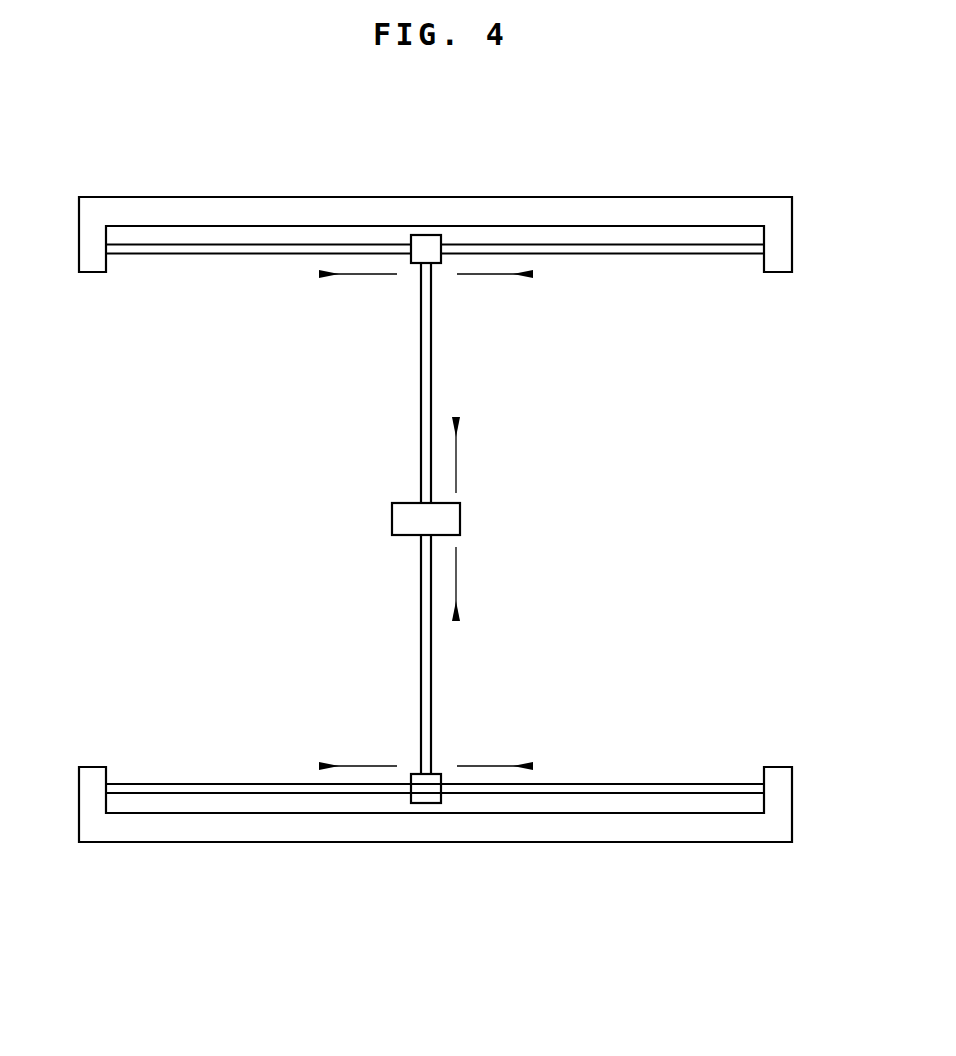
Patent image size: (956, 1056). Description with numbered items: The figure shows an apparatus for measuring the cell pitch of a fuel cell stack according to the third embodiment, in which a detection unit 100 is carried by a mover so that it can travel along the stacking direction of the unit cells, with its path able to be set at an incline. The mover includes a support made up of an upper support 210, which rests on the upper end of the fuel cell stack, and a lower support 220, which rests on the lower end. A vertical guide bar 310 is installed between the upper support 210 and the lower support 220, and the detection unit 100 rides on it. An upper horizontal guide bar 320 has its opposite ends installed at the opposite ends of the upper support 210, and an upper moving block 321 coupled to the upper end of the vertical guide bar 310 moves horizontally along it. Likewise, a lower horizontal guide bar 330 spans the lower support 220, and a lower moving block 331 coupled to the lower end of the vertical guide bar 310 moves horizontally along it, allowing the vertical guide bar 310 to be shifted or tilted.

The detection unit 100 is at (460, 517).
The upper support 210 is at (651, 205).
The lower support 220 is at (655, 833).
The vertical guide bar 310 is at (432, 366).
The upper horizontal guide bar 320 is at (693, 250).
The upper moving block 321 is at (425, 247).
The lower horizontal guide bar 330 is at (651, 783).
The lower moving block 331 is at (435, 775).